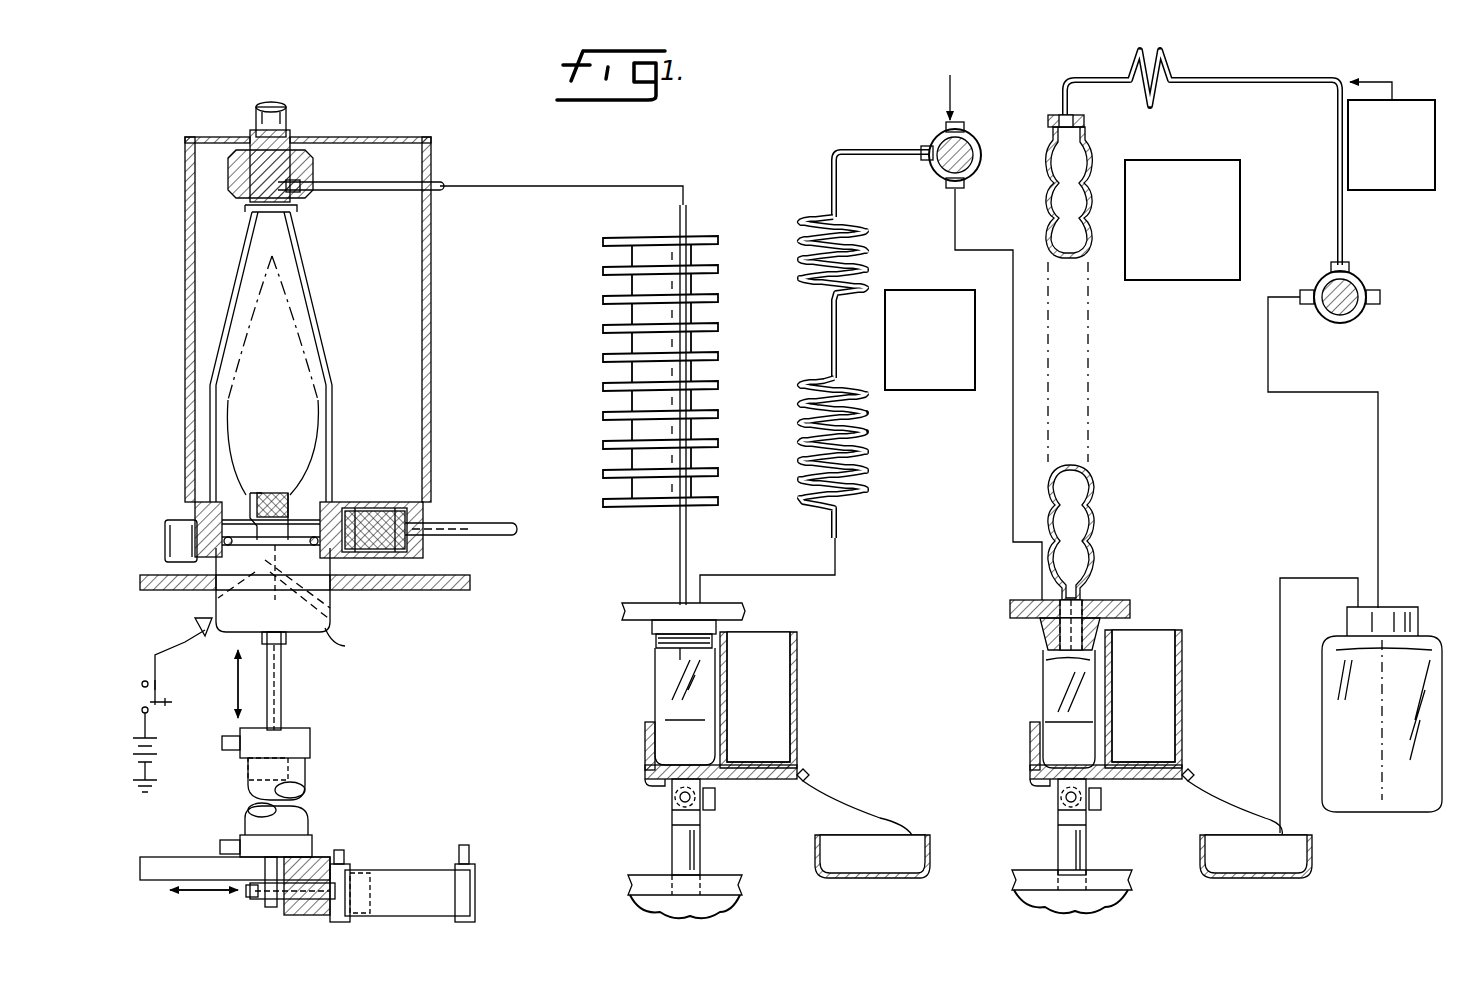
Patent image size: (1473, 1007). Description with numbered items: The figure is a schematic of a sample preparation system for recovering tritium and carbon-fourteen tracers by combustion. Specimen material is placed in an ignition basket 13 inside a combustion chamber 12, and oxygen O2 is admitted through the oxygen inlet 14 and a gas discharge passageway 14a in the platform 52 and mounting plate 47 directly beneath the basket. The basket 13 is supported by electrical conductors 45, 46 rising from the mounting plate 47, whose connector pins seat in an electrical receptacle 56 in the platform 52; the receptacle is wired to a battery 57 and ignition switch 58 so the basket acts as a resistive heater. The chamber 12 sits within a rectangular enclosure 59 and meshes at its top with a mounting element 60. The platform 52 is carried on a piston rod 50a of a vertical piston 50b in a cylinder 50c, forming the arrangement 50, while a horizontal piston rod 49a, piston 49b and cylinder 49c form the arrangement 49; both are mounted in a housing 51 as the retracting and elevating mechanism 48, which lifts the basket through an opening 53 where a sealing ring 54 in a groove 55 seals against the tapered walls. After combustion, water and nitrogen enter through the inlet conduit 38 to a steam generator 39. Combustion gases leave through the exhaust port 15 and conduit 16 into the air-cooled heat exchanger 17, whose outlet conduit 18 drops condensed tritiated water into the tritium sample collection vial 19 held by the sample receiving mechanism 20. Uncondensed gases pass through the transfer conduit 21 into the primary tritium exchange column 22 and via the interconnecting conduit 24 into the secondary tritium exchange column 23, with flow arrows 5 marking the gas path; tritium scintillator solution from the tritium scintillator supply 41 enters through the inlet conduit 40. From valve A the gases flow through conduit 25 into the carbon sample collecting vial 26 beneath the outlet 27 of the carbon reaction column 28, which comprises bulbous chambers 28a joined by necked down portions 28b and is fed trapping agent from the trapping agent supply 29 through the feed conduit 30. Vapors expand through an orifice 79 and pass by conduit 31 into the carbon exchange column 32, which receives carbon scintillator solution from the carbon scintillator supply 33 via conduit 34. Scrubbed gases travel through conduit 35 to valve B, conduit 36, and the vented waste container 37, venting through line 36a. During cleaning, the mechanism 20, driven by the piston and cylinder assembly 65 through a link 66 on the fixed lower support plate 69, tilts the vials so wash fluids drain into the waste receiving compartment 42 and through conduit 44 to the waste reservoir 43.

The combustion chamber 12 is at (330, 345).
The ignition basket 13 is at (268, 492).
The oxygen inlet 14 is at (328, 645).
The gas discharge passageway 14a is at (333, 603).
The exhaust port 15 is at (298, 196).
The conduit 16 is at (372, 192).
The heat exchanger 17 is at (598, 350).
The heat exchanger outlet conduit 18 is at (680, 540).
The tritium sample collection vial 19 is at (655, 680).
The sample receiving mechanism 20 is at (640, 750).
The transfer conduit 21 is at (788, 572).
The primary tritium exchange column 22 is at (870, 464).
The secondary tritium exchange column 23 is at (870, 262).
The interconnecting conduit 24 is at (832, 190).
The conduit 25 is at (956, 226).
The carbon sample collecting vial 26 is at (1043, 682).
The outlet of carbon reaction column 27 is at (1048, 640).
The carbon reaction column 28 is at (1096, 440).
The bulbous chambers 28a is at (1094, 482).
The necked down portions 28b is at (1094, 508).
The trapping agent supply 29 is at (1240, 194).
The feed conduit 30 is at (1125, 222).
The conduit 31 is at (1092, 82).
The carbon exchange column 32 is at (1162, 98).
The carbon scintillator supply 33 is at (1426, 100).
The conduit 34 is at (1368, 80).
The conduit 35 is at (1255, 84).
The conduit 36 is at (1375, 462).
The line 36a is at (1278, 688).
The vented waste container 37 is at (1392, 812).
The inlet conduit 38 is at (452, 526).
The steam generator 39 is at (407, 497).
The inlet conduit 40 is at (885, 335).
The tritium scintillator supply 41 is at (945, 392).
The waste receiving compartment 42 is at (783, 706).
The waste reservoir 43 is at (932, 858).
The conduit 44 is at (842, 812).
The electrical conductor 45 is at (252, 492).
The electrical conductor 46 is at (318, 500).
The mounting plate 47 is at (322, 520).
The retracting and elevating mechanism 48 is at (350, 792).
The pneumatic piston and cylinder arrangement 49 is at (478, 890).
The piston rod 49a is at (295, 890).
The piston 49b is at (358, 870).
The cylinder 49c is at (455, 850).
The pneumatic piston and cylinder arrangement 50 is at (308, 788).
The pneumatic piston rod 50a is at (284, 705).
The piston 50b is at (310, 760).
The cylinder 50c is at (248, 810).
The housing 51 is at (192, 856).
The platform 52 is at (318, 634).
The opening 53 is at (215, 592).
The sealing ring 54 is at (216, 545).
The groove 55 is at (200, 540).
The electrical receptacle 56 is at (180, 640).
The battery 57 is at (158, 748).
The ignition switch 58 is at (158, 703).
The rectangular enclosure 59 is at (432, 324).
The mounting element 60 is at (313, 172).
The flow direction 5 is at (872, 298).
The pneumatic piston and cylinder assembly 65 is at (722, 904).
The link 66 is at (672, 856).
The fixed lower support plate 69 is at (722, 878).
The orifice 79 is at (1074, 126).
The oxygen O2 is at (355, 626).